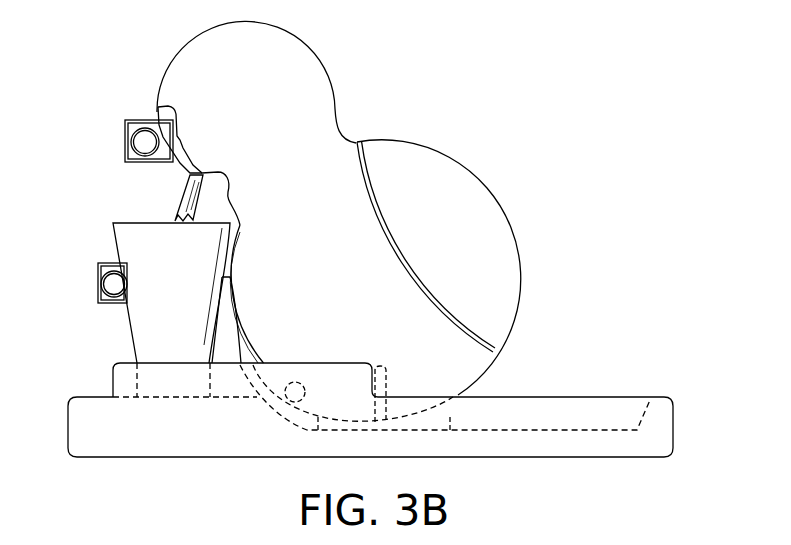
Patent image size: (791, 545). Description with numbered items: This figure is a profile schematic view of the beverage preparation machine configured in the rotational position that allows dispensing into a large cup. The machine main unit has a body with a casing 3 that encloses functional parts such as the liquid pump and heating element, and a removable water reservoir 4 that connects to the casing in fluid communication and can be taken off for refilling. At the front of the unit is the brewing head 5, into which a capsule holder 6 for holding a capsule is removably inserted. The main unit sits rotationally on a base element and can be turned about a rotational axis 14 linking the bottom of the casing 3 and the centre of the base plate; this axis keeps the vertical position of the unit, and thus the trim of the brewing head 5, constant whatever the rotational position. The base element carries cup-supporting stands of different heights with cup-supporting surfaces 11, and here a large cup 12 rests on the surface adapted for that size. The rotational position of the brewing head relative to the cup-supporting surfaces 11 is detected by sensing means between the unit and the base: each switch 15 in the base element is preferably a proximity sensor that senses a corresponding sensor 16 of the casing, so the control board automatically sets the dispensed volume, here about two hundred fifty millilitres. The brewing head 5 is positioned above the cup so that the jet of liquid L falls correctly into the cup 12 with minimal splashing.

The casing 3 is at (324, 266).
The water reservoir 4 is at (451, 241).
The brewing head 5 is at (231, 97).
The capsule holder 6 is at (160, 115).
The jet of liquid L is at (176, 208).
The cup-supporting surface 11 is at (122, 322).
The cup 12 is at (186, 304).
The rotational axis 14 is at (388, 378).
The mechanical switch 15 is at (224, 333).
The sensor 16 is at (299, 382).